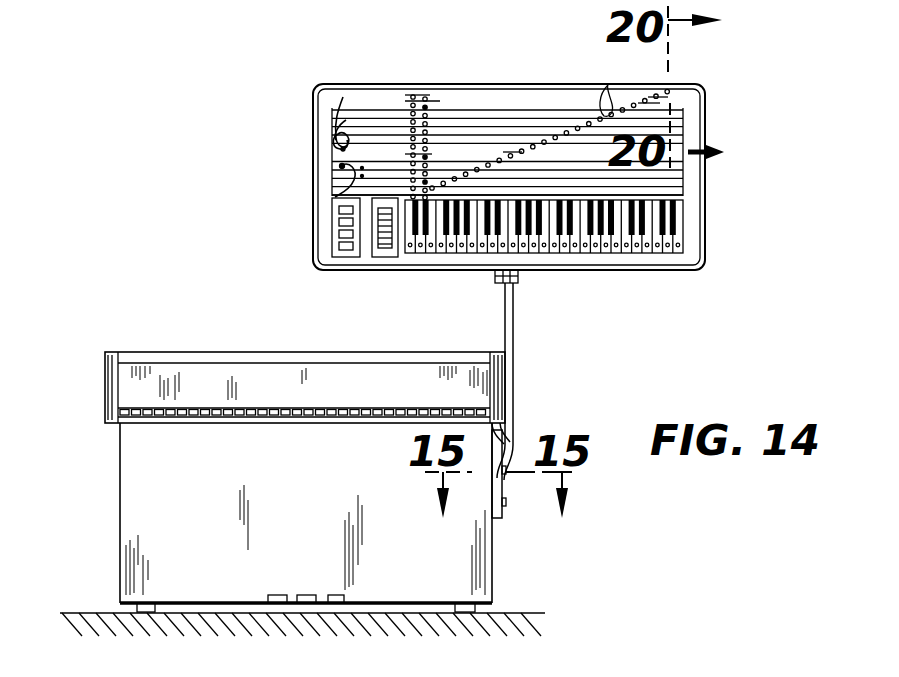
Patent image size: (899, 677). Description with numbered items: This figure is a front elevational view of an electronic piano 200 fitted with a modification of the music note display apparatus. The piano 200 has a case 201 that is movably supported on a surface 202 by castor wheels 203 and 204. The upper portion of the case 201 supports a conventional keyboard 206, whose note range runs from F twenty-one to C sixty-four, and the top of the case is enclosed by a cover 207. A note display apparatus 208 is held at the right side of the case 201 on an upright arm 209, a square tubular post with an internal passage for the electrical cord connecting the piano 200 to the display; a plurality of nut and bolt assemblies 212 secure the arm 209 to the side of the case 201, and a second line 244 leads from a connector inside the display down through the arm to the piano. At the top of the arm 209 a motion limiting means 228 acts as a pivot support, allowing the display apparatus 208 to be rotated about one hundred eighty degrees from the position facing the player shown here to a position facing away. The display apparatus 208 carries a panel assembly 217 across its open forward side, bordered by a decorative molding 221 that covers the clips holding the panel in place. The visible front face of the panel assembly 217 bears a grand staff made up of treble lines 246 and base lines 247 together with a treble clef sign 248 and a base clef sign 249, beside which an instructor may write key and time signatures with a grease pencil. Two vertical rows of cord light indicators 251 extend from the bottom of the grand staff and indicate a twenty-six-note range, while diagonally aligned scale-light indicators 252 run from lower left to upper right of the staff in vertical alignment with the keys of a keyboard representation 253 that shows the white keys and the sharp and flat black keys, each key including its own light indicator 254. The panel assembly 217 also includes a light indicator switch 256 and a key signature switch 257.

The electronic piano 200 is at (263, 513).
The case 201 is at (142, 513).
The surface 202 is at (102, 612).
The castor wheel 203 is at (157, 606).
The castor wheel 204 is at (458, 606).
The keyboard 206 is at (226, 409).
The cover 207 is at (170, 352).
The note display apparatus 208 is at (303, 83).
The arm 209 is at (513, 333).
The nut and bolt assemblies 212 is at (505, 482).
The panel assembly 217 is at (538, 92).
The decorative molding 221 is at (703, 89).
The motion limiting means 228 is at (482, 287).
The second line 244 is at (510, 415).
The treble lines 246 is at (553, 103).
The base lines 247 is at (674, 183).
The treble clef sign 248 is at (339, 110).
The base clef sign 249 is at (342, 166).
The vertical cord light indicators 251 is at (428, 97).
The scale-light indicators 252 is at (607, 94).
The keyboard representation 253 is at (678, 248).
The light indicator 254 is at (626, 248).
The light indicator switch 256 is at (332, 220).
The key signature switch 257 is at (385, 258).